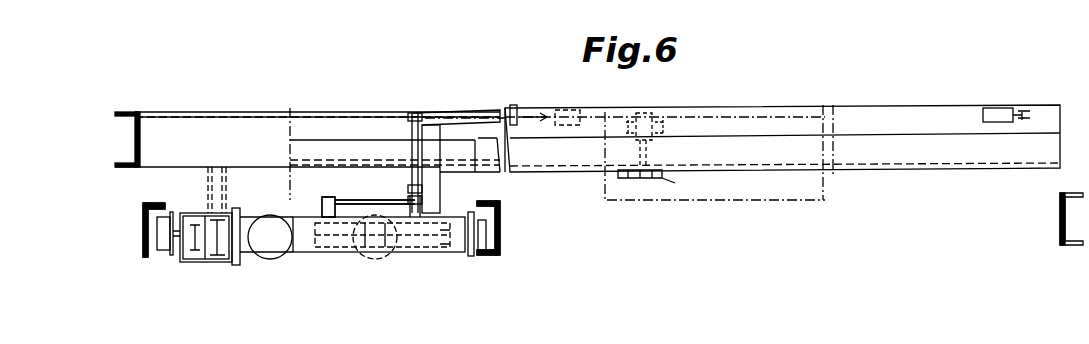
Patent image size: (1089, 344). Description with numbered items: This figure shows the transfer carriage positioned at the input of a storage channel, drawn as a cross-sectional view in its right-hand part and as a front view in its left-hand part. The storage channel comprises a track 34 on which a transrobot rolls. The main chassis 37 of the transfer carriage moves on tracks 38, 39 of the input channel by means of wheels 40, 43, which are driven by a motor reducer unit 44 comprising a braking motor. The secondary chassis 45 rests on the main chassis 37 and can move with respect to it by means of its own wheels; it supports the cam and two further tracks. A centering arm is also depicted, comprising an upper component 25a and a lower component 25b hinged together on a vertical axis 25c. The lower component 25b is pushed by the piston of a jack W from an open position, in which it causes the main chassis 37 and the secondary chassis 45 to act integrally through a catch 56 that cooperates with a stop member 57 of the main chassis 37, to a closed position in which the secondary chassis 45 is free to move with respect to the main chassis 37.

The track 34 is at (757, 125).
The secondary chassis 45 is at (298, 110).
The catch 56 is at (330, 197).
The upper component of centering arm 25a is at (453, 122).
The lower component of centering arm 25b is at (358, 204).
The vertical axis 25c is at (412, 147).
The main chassis 37 is at (303, 252).
The track 38 is at (153, 257).
The track 39 is at (497, 257).
The wheel 40 is at (160, 236).
The wheel 43 is at (486, 235).
The motor reducer unit 44 is at (268, 260).
The stop member 57 is at (373, 212).
The jack W is at (395, 243).